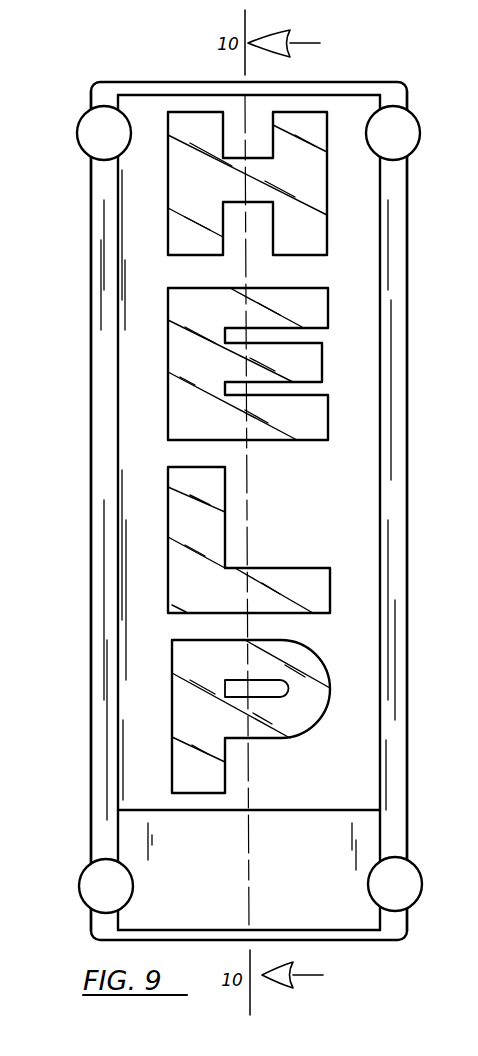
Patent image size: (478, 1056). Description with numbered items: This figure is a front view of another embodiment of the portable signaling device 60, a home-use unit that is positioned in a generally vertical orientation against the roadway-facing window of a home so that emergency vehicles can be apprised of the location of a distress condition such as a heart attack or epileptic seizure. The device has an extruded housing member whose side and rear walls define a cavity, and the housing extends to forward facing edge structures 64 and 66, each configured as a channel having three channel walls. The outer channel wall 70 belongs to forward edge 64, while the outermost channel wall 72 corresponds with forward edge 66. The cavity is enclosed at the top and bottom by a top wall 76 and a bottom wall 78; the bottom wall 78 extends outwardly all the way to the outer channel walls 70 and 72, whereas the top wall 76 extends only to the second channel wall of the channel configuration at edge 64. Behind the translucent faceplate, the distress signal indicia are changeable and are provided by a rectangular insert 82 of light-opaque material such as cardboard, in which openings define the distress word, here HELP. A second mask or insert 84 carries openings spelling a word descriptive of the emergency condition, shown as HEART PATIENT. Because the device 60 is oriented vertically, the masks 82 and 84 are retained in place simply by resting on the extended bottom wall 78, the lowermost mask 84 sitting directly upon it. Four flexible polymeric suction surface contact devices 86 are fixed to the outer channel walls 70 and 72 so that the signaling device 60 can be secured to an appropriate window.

The portable signaling device 60 is at (387, 60).
The forward facing edge structure 64 is at (92, 427).
The forward facing edge structure 66 is at (407, 427).
The outer channel wall 70 is at (104, 558).
The outer channel wall 72 is at (397, 537).
The top wall 76 is at (318, 88).
The bottom wall 78 is at (350, 942).
The rectangular insert 82 is at (157, 110).
The second mask or insert 84 is at (368, 838).
The flexible polymeric suction surface contact devices 86 is at (92, 130).